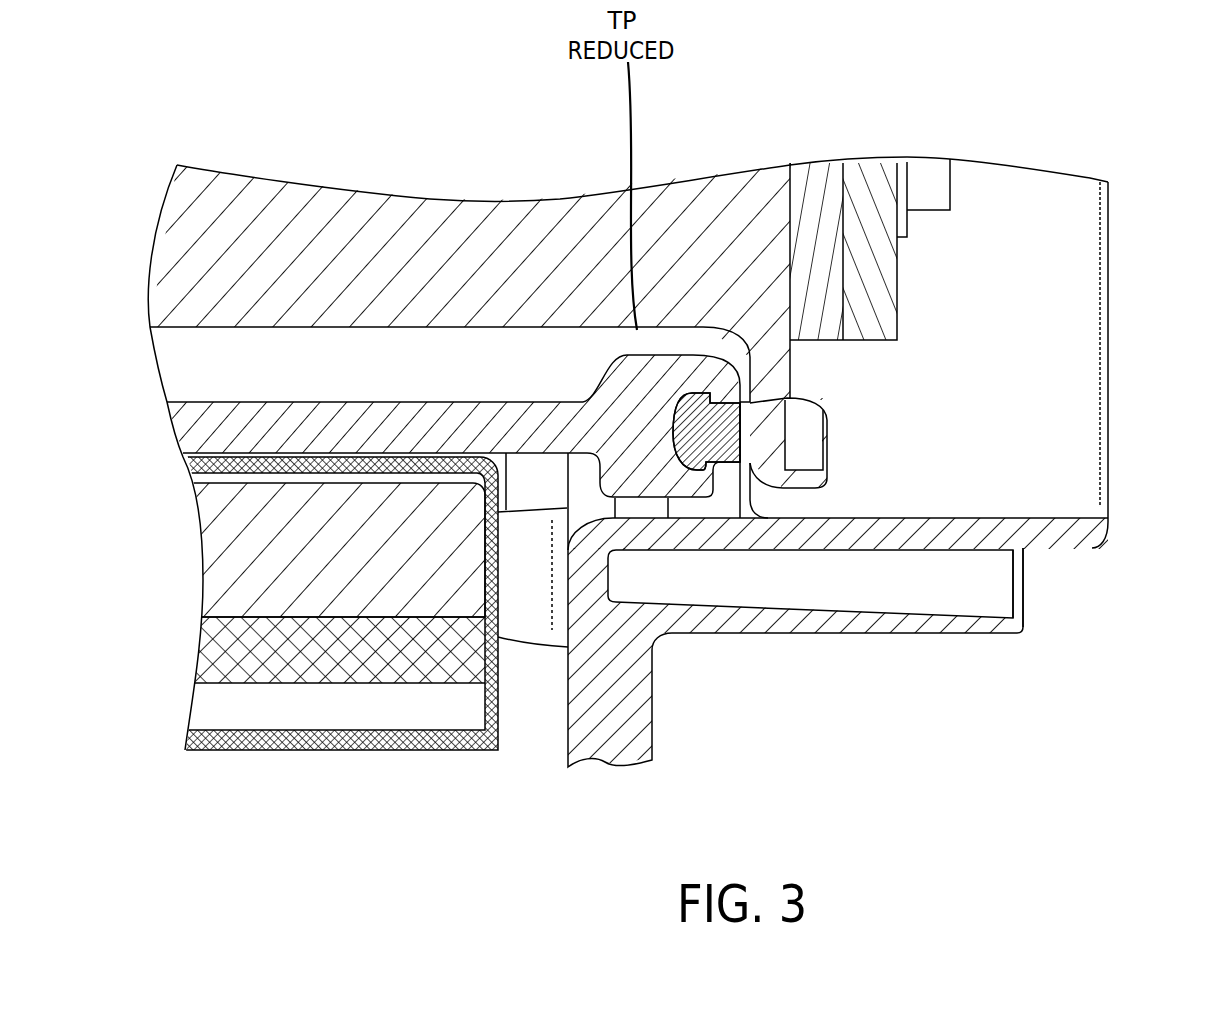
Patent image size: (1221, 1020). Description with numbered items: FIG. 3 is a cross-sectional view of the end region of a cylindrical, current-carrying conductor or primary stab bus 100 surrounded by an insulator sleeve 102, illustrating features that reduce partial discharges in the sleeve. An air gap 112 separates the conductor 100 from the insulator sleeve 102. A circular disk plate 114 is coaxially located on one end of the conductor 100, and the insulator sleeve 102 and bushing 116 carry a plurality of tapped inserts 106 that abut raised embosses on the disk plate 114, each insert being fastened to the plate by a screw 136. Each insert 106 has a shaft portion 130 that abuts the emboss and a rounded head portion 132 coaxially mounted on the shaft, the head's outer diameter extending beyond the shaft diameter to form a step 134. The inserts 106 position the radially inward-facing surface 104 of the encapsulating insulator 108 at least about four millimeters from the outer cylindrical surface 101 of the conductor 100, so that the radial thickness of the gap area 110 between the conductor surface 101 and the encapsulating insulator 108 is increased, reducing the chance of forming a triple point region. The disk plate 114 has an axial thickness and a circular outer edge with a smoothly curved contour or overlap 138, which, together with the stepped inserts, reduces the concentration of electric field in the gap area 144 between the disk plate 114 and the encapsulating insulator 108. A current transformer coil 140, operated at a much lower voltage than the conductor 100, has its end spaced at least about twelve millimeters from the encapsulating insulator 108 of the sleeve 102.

The conductor 100 is at (243, 217).
The outer cylindrical surface 101 is at (452, 327).
The insulator sleeve 102 is at (423, 417).
The radially inward-facing surface 104 is at (483, 402).
The tapped insert 106 is at (700, 463).
The encapsulating insulator 108 is at (667, 480).
The gap area 110 is at (610, 327).
The air gap 112 is at (560, 353).
The circular disk plate 114 is at (790, 370).
The bushing 116 is at (977, 635).
The shaft portion 130 is at (732, 403).
The rounded head portion 132 is at (687, 390).
The step 134 is at (703, 393).
The screw 136 is at (827, 440).
The curved contour or overlap 138 is at (787, 482).
The current transformer coil 140 is at (277, 597).
The gap area 144 is at (747, 500).